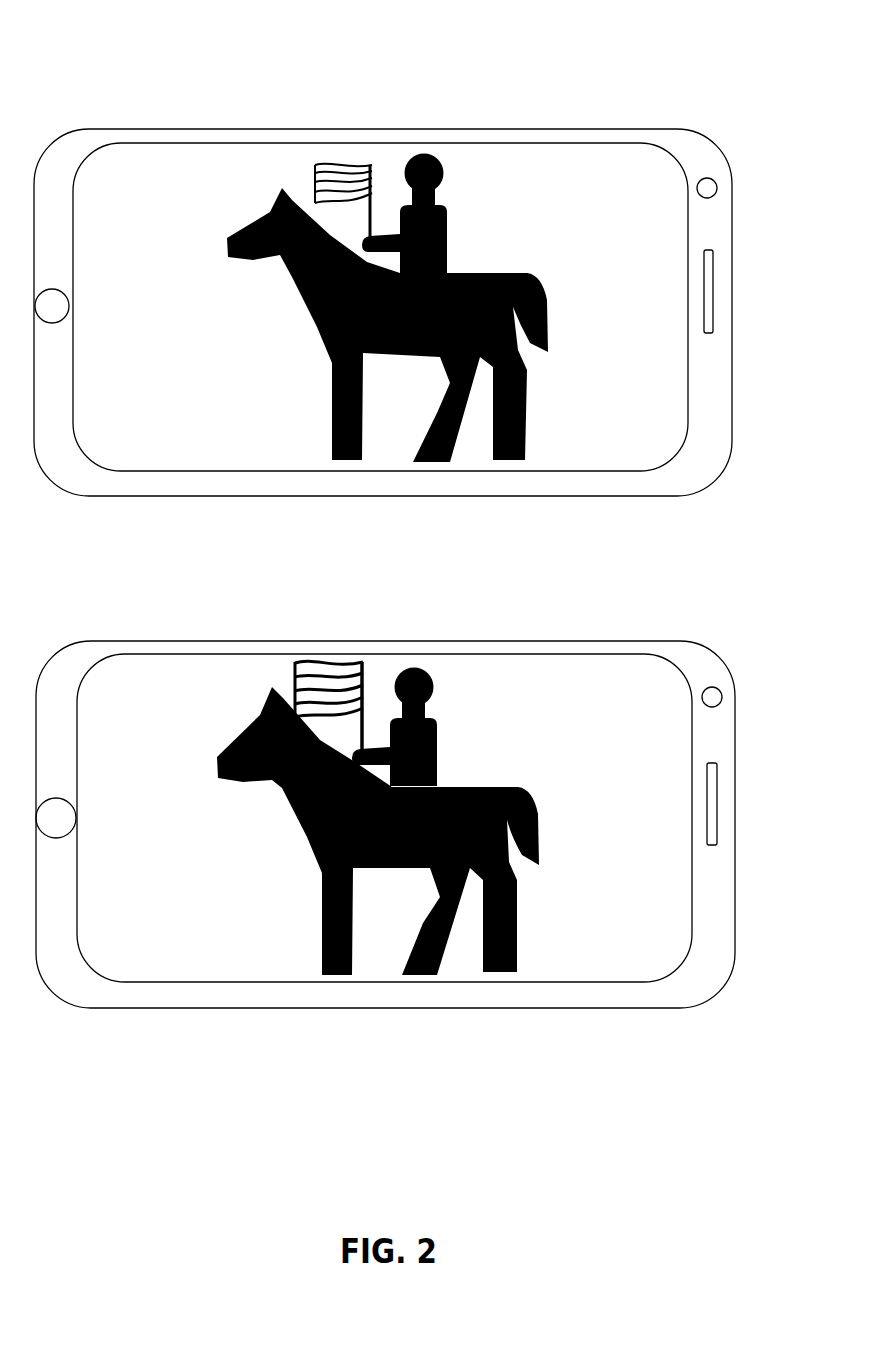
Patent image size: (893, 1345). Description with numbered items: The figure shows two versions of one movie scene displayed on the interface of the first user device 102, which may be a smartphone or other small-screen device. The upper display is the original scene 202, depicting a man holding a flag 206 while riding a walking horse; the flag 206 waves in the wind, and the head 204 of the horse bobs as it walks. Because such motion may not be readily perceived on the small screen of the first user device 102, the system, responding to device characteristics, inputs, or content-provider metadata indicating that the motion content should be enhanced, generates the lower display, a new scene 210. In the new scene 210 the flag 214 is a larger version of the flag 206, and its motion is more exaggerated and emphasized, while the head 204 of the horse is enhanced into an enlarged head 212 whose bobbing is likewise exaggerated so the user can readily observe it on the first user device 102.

The first user device 102 is at (732, 309).
The original scene 202 is at (126, 170).
The head of the horse 204 is at (246, 222).
The flag 206 is at (344, 165).
The new scene 210 is at (127, 687).
The enlarged head 212 is at (246, 722).
The flag 214 is at (322, 662).